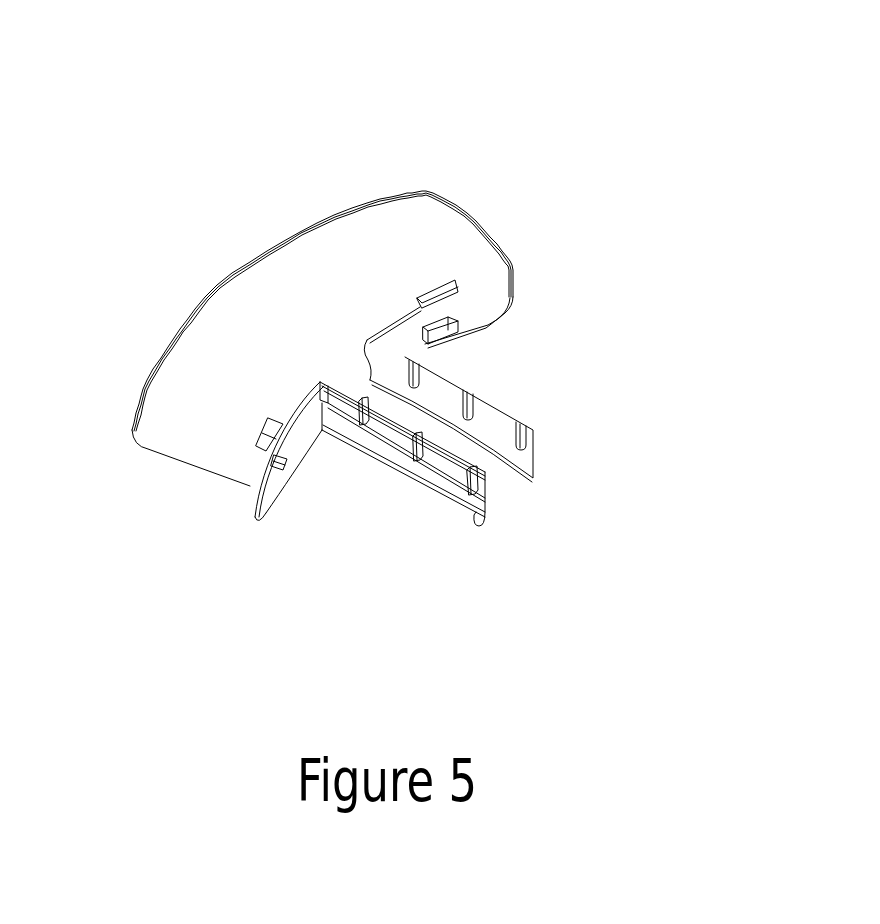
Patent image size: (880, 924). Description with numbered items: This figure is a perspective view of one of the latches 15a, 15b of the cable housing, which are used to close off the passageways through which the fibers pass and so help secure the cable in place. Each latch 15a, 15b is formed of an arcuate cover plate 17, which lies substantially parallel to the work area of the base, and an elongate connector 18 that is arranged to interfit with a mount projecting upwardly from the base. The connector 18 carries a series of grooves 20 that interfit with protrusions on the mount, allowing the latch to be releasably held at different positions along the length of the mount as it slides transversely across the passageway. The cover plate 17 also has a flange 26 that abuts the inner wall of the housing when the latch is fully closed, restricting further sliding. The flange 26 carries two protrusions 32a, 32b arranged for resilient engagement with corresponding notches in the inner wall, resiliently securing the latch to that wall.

The latch 15a is at (429, 292).
The latch 15b is at (478, 233).
The arcuate cover plate 17 is at (415, 244).
The elongate connector 18 is at (379, 576).
The grooves 20 is at (522, 430).
The flange 26 is at (300, 428).
The protrusion 32a is at (272, 478).
The protrusion 32b is at (447, 330).